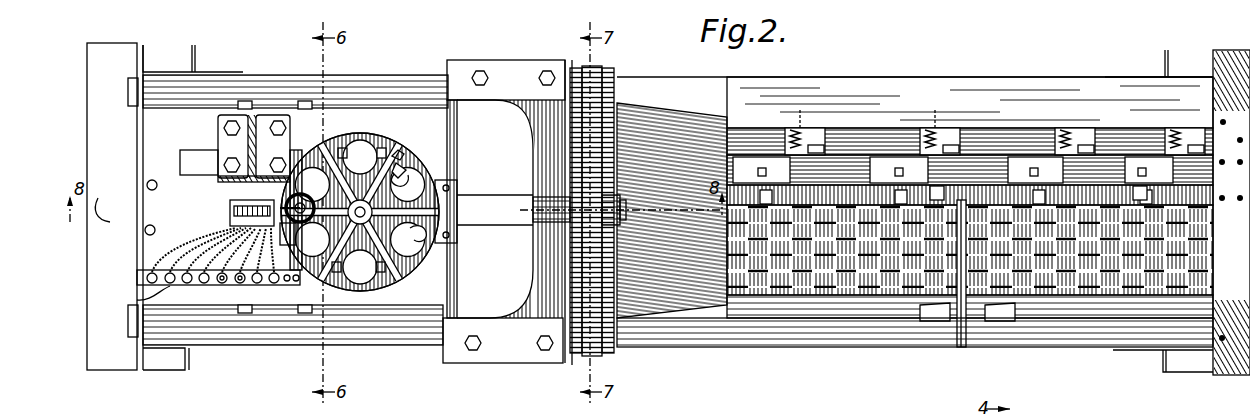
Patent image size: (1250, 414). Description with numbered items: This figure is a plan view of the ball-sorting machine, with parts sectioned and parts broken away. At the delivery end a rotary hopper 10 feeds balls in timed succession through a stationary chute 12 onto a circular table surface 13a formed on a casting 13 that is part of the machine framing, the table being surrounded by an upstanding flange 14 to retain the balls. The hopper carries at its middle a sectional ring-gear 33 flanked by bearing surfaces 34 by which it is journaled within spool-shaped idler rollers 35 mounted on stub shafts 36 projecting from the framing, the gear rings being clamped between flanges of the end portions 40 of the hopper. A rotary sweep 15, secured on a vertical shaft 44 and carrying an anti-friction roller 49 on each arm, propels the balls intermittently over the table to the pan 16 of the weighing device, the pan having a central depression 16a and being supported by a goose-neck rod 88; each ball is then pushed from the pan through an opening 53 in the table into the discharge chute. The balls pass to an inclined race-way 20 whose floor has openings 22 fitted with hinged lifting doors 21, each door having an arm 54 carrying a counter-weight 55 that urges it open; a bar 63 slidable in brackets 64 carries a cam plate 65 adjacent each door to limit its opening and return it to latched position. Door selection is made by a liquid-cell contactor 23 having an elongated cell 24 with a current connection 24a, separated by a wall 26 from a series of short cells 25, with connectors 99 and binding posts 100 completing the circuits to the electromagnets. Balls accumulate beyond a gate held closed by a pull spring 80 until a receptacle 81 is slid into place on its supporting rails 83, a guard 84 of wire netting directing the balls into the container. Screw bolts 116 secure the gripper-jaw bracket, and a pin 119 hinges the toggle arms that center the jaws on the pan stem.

The rotary hopper 10 is at (668, 209).
The stationary chute 12 is at (446, 180).
The casting 13 is at (341, 292).
The circular table surface 13a is at (376, 152).
The upstanding flange 14 is at (390, 160).
The rotary sweep 15 is at (358, 150).
The pan 16 is at (305, 160).
The central depression 16a is at (292, 268).
The inclined race-way 20 is at (850, 156).
The hinged lifting doors 21 is at (762, 170).
The openings 22 is at (745, 165).
The liquid-cell contactor 23 is at (226, 226).
The elongated cell 24 is at (235, 185).
The connection 24a is at (158, 271).
The short cells 25 is at (228, 212).
The wall 26 is at (147, 186).
The sectional ring-gear 33 is at (594, 68).
The bearing surfaces 34 is at (575, 68).
The spool-shaped idler rollers 35 is at (600, 200).
The stub shafts 36 is at (624, 208).
The end portions of the hopper 40 is at (476, 312).
The vertical shaft 44 is at (398, 175).
The anti-friction roller 49 is at (352, 145).
The opening 53 is at (322, 162).
The arm 54 is at (802, 148).
The counter-weight 55 is at (814, 152).
The bar 63 is at (740, 200).
The brackets 64 is at (940, 186).
The cam plate 65 is at (1140, 194).
The pull spring 80 is at (797, 130).
The receptacle 81 is at (938, 318).
The supporting rails 83 is at (961, 320).
The guard 84 is at (792, 292).
The goose-neck rod 88 is at (242, 286).
The connectors 99 is at (137, 299).
The binding posts 100 is at (223, 286).
The screw bolts 116 is at (145, 232).
The pin 119 is at (109, 191).